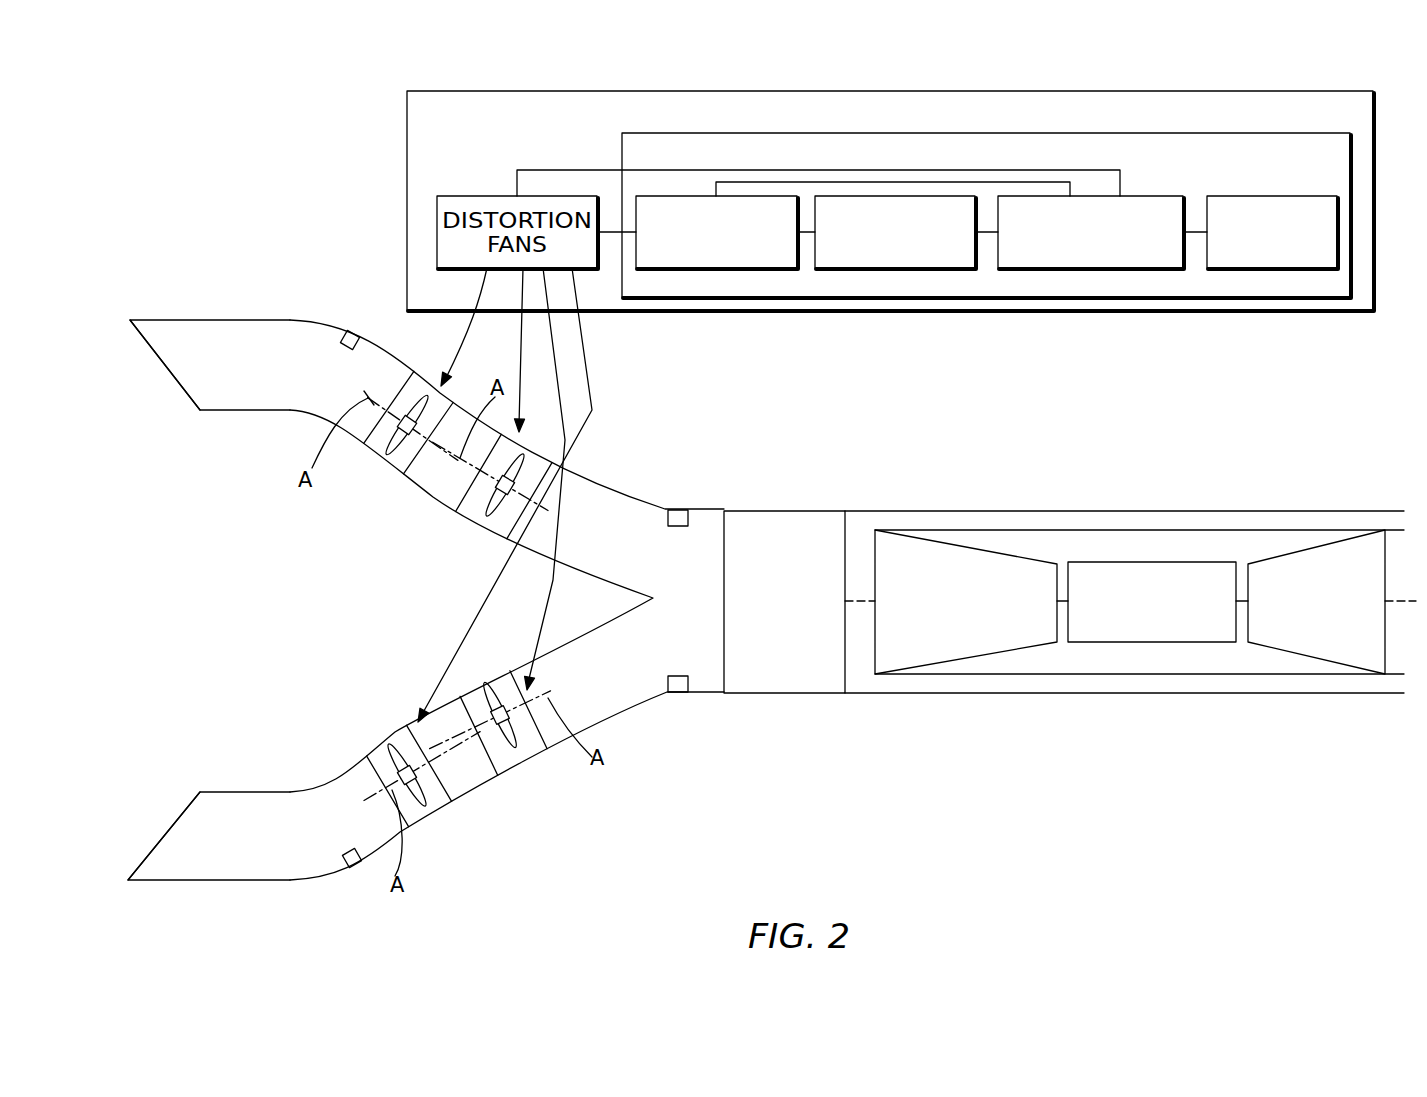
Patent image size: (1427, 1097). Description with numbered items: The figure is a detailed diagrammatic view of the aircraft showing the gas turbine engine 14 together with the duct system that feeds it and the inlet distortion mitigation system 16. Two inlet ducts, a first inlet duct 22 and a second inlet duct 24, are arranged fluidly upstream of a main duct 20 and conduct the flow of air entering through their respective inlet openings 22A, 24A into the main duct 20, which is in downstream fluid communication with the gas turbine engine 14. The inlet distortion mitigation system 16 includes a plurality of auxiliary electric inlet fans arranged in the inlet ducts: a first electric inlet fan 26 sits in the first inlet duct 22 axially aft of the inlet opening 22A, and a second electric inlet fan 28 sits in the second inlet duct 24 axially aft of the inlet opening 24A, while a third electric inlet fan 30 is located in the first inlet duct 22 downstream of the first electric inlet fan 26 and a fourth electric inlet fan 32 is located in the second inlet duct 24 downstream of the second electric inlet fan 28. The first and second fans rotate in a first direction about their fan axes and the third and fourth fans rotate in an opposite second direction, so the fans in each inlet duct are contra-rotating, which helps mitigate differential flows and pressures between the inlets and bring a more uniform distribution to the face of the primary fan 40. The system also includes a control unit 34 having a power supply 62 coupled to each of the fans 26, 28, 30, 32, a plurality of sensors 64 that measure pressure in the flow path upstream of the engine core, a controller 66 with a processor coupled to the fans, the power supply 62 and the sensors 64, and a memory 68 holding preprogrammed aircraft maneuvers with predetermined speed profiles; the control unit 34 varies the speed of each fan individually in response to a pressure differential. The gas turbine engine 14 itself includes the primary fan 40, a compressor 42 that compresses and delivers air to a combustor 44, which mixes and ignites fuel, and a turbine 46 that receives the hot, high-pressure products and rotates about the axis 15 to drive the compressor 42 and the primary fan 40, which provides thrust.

The gas turbine engine 14 is at (1035, 710).
The axis 15 is at (1412, 600).
The inlet distortion mitigation system 16 is at (1297, 91).
The main duct 20 is at (700, 616).
The first inlet duct 22 is at (246, 849).
The inlet opening 22A is at (153, 829).
The second inlet duct 24 is at (246, 376).
The inlet opening 24A is at (153, 371).
The first electric inlet fan 26 is at (446, 830).
The second electric inlet fan 28 is at (410, 360).
The third electric inlet fan 30 is at (535, 778).
The fourth electric inlet fan 32 is at (462, 540).
The control unit 34 is at (1210, 133).
The primary fan 40 is at (800, 693).
The compressor 42 is at (950, 667).
The combustor 44 is at (1137, 642).
The turbine 46 is at (1332, 667).
The power supply 62 is at (683, 196).
The sensors 64 is at (855, 196).
The controller 66 is at (1158, 196).
The memory 68 is at (1282, 196).